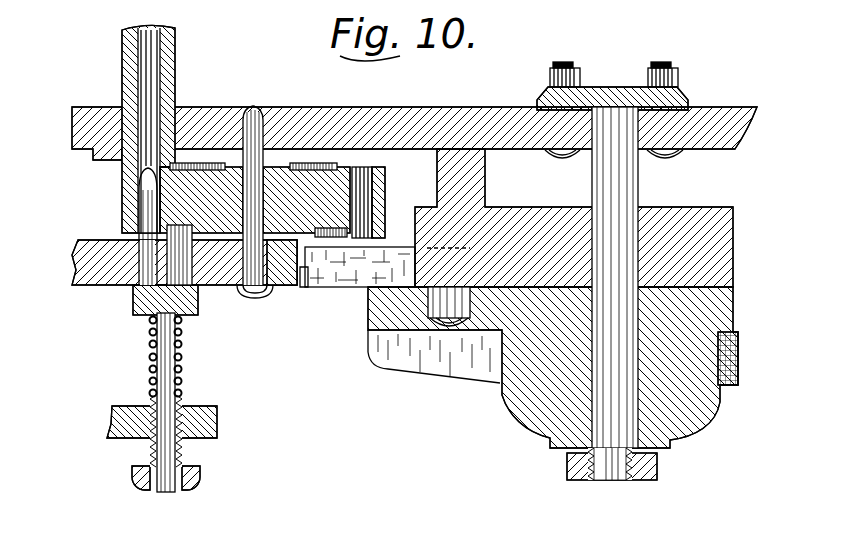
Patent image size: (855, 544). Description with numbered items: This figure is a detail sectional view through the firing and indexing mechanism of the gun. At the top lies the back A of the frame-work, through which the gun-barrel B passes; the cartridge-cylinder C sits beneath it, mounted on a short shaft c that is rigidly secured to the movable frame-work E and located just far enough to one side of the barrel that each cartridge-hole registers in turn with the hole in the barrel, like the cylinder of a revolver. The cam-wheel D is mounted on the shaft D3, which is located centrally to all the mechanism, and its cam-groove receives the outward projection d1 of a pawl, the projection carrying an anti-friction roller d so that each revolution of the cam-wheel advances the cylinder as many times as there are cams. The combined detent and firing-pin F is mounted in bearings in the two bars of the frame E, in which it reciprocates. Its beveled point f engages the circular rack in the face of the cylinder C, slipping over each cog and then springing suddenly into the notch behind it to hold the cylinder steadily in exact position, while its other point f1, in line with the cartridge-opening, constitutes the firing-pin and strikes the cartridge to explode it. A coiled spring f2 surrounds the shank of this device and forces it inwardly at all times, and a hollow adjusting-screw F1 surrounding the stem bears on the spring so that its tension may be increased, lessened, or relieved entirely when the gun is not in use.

The back of the frame-work A is at (363, 125).
The gun-barrels B is at (160, 62).
The cartridge-cylinders C is at (272, 200).
The short shaft c is at (255, 106).
The cam-wheel D is at (378, 307).
The shaft D3 is at (613, 188).
The anti-friction rollers d is at (458, 302).
The outward projections d1 is at (453, 328).
The movable frame-work E is at (248, 416).
The combined detent and firing-pin F is at (168, 383).
The hollow adjusting-screw F1 is at (182, 454).
The point f is at (183, 261).
The point f1 is at (139, 252).
The coiled spring f2 is at (150, 375).